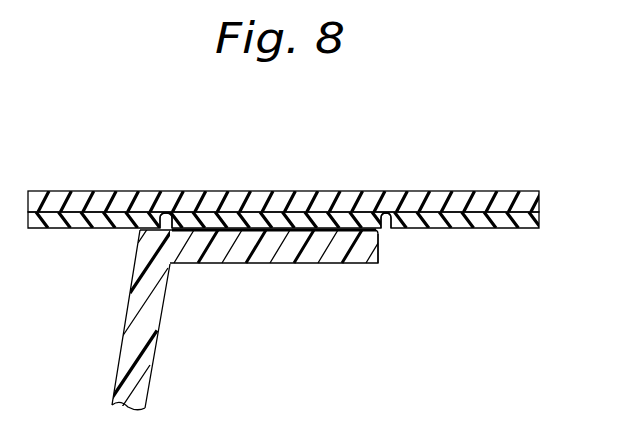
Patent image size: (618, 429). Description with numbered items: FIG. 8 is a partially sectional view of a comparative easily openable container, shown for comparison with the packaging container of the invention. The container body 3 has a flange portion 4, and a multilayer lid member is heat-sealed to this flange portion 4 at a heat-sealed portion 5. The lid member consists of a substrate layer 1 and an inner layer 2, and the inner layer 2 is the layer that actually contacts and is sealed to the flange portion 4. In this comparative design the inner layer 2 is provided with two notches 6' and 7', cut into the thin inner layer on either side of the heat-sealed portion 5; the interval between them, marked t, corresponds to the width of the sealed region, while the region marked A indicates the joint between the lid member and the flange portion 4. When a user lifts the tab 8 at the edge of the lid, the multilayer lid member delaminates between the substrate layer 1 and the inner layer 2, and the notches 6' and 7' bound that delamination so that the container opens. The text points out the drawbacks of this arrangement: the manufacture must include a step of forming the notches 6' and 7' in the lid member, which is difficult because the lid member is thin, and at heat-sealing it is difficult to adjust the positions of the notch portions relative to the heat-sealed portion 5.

The substrate layer 1 is at (533, 198).
The inner layer 2 is at (535, 220).
The container body 3 is at (153, 372).
The flange portion 4 is at (317, 265).
The heat-sealed portion 5 is at (383, 233).
The notch 6' is at (132, 189).
The notch 7' is at (414, 241).
The tab 8 is at (448, 190).
The adhesive layer A is at (215, 232).
The thickness t is at (223, 160).